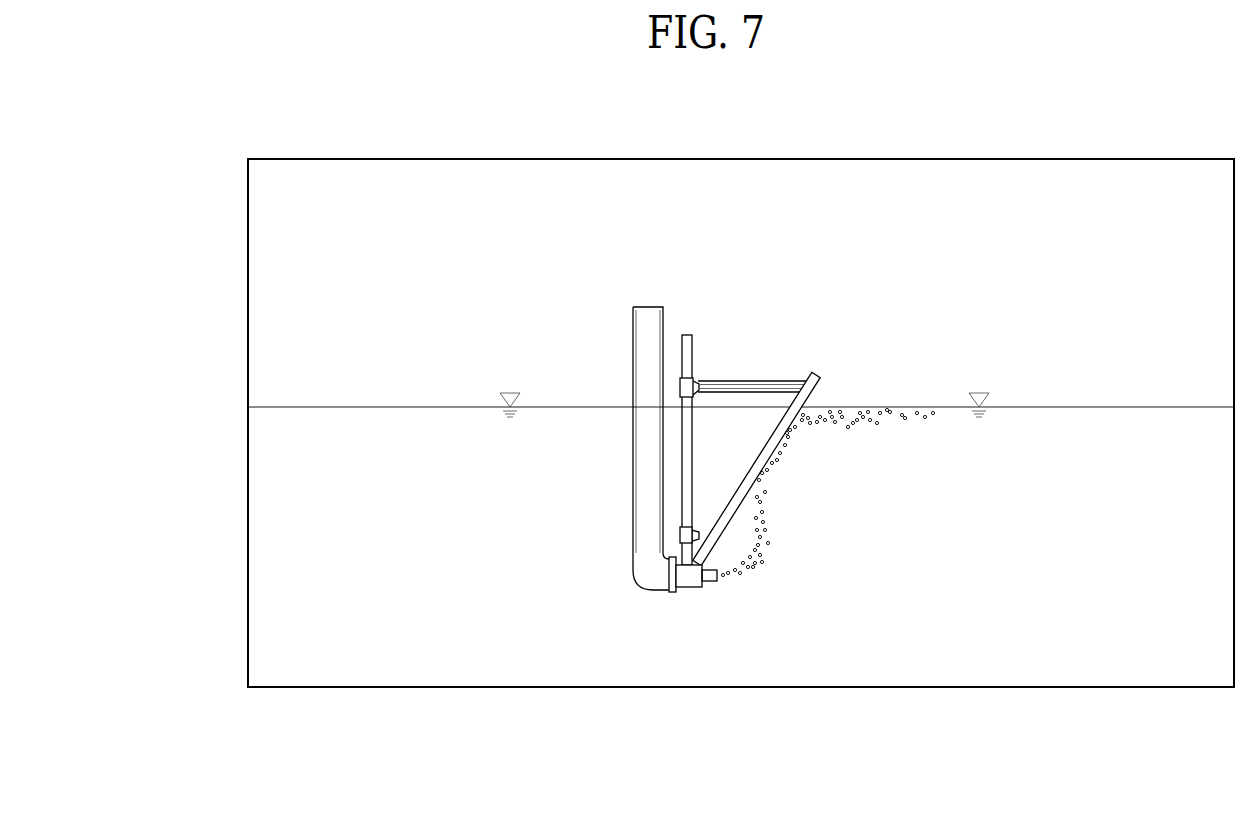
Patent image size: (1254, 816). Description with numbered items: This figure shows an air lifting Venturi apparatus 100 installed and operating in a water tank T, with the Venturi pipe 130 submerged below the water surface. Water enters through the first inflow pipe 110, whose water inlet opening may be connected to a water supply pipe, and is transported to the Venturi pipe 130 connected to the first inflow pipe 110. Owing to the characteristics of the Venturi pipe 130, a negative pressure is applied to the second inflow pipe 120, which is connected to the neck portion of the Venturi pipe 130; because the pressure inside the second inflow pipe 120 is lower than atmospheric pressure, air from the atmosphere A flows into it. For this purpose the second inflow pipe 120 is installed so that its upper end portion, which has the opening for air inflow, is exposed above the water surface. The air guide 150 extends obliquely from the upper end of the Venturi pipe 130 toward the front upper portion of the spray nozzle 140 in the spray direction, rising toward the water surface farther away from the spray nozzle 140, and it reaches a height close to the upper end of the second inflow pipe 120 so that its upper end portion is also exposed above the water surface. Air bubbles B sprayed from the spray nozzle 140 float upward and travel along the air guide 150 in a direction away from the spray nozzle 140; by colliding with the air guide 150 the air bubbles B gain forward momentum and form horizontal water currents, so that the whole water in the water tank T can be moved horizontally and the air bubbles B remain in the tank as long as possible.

The air lifting Venturi apparatus 100 is at (751, 432).
The first inflow pipe 110 is at (633, 333).
The second inflow pipe 120 is at (692, 353).
The Venturi pipe 130 is at (688, 578).
The spray nozzle 140 is at (713, 580).
The air guide 150 is at (785, 445).
The atmosphere A is at (385, 185).
The air bubbles B is at (762, 562).
The water tank T is at (248, 648).